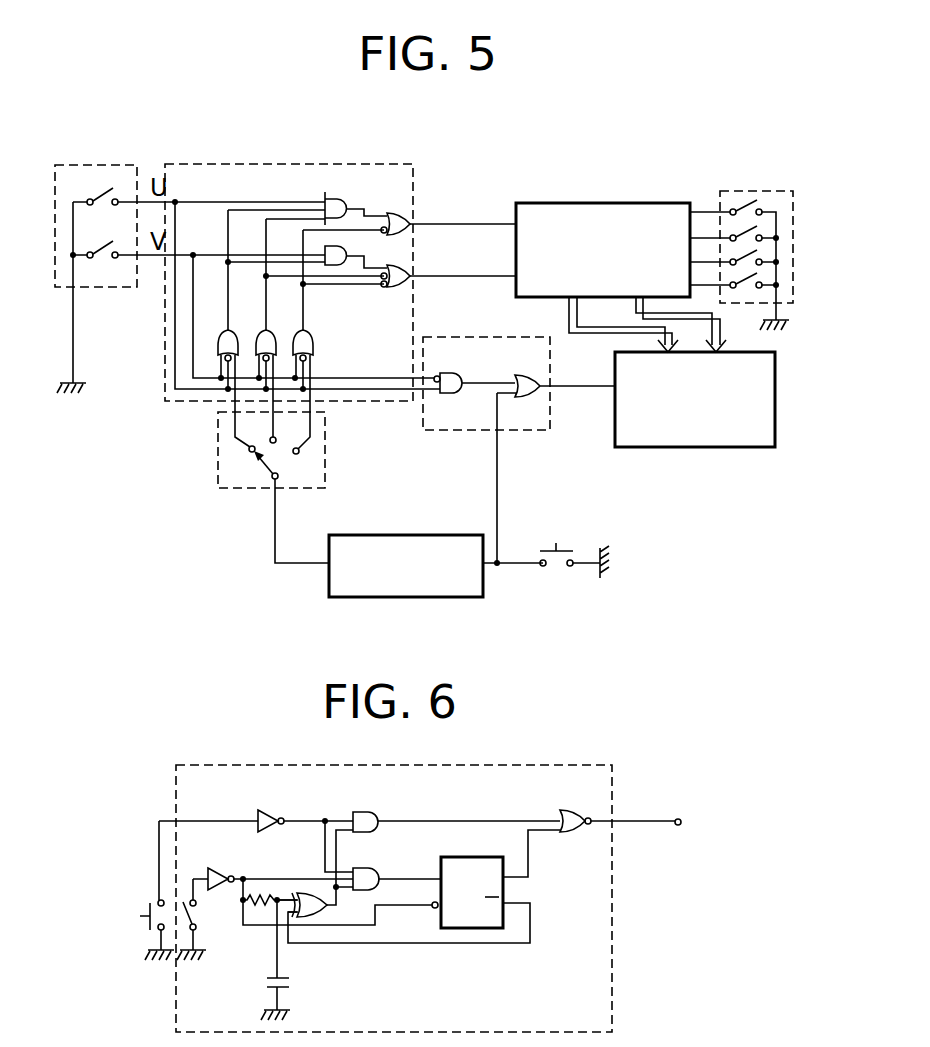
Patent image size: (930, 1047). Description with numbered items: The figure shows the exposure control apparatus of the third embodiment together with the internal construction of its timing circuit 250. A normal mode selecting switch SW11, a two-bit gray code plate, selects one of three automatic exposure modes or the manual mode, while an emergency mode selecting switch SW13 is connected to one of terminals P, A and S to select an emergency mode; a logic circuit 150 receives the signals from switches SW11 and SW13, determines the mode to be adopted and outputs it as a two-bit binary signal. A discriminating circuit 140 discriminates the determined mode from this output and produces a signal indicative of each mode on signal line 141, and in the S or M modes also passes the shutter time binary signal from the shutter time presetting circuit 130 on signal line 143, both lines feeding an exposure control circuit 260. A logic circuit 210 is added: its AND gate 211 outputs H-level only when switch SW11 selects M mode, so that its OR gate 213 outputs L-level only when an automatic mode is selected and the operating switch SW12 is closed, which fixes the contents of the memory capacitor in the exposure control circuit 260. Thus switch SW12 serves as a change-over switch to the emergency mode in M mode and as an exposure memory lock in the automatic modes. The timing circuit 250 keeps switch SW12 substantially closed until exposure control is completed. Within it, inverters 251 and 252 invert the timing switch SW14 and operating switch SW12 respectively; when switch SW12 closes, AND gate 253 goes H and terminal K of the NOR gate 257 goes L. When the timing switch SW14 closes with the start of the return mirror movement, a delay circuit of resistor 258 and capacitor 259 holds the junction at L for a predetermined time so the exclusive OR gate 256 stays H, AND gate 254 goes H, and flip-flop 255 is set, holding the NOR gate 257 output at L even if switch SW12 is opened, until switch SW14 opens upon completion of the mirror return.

In FIG. 5, the normal mode selecting switch SW11 is at (108, 165).
In FIG. 5, the logic circuit 150 is at (270, 164).
In FIG. 5, the discriminating circuit 140 is at (603, 203).
In FIG. 5, the shutter time presetting circuit 130 is at (752, 191).
In FIG. 5, the signal line 141 is at (569, 321).
In FIG. 5, the signal line 143 is at (643, 315).
In FIG. 5, the logic circuit 210 is at (519, 450).
In FIG. 5, the AND gate 211 is at (450, 394).
In FIG. 5, the OR gate 213 is at (520, 377).
In FIG. 5, the emergency mode selecting switch SW13 is at (218, 462).
In FIG. 5, the timing circuit 250 is at (407, 535).
In FIG. 6, the timing circuit 250 is at (613, 788).
In FIG. 5, the exposure control circuit 260 is at (703, 450).
In FIG. 5, the operating switch SW12 is at (556, 575).
In FIG. 6, the operating switch SW12 is at (150, 916).
In FIG. 6, the inverter 251 is at (215, 870).
In FIG. 6, the inverter 252 is at (268, 812).
In FIG. 6, the AND gate 253 is at (375, 815).
In FIG. 6, the AND gate 254 is at (375, 870).
In FIG. 6, the flip-flop 255 is at (472, 930).
In FIG. 6, the exclusive OR gate 256 is at (305, 893).
In FIG. 6, the NOR gate 257 is at (573, 835).
In FIG. 6, the resistor 258 is at (266, 890).
In FIG. 6, the capacitor 259 is at (290, 983).
In FIG. 6, the timing switch SW14 is at (197, 915).